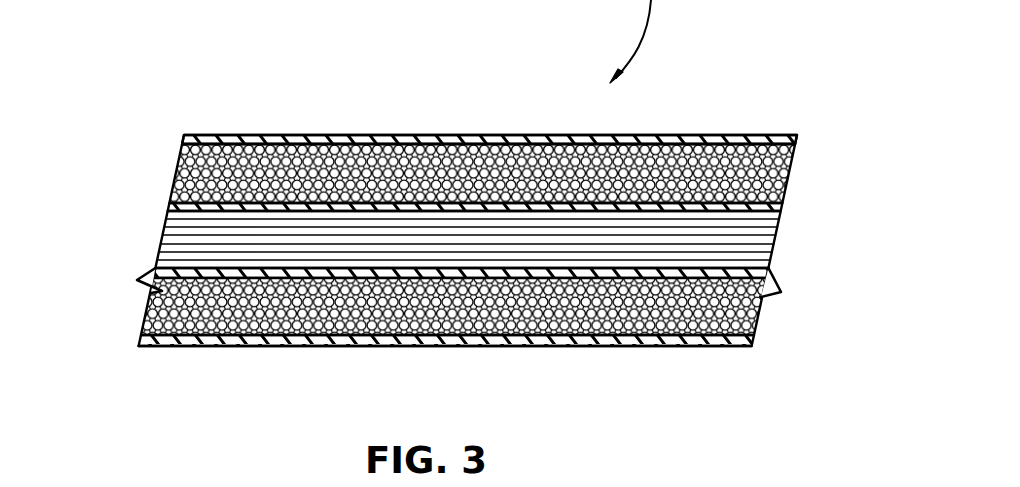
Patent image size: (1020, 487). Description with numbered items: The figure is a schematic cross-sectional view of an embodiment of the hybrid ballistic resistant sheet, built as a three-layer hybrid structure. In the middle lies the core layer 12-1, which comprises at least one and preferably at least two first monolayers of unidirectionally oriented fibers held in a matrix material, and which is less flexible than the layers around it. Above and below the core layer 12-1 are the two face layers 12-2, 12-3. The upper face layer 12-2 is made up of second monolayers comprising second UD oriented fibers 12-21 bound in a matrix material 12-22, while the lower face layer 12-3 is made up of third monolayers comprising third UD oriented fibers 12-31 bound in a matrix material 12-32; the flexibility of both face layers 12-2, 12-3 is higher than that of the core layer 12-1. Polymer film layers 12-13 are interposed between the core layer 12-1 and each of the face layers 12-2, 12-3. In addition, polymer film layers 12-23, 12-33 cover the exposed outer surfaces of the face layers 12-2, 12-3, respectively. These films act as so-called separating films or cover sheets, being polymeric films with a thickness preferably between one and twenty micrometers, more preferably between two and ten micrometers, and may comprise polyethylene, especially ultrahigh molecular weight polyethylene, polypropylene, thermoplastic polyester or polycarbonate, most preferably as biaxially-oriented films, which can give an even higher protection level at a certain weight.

The core layer 12-1 is at (753, 242).
The face layer 12-2 is at (457, 160).
The second UD oriented fibers 12-21 is at (203, 148).
The matrix material 12-22 is at (170, 190).
The polymer film layer 12-23 is at (720, 136).
The polymer film layers 12-13 is at (788, 202).
The face layer 12-3 is at (267, 317).
The third UD oriented fibers 12-31 is at (150, 312).
The matrix material 12-32 is at (175, 335).
The polymer film layer 12-33 is at (683, 345).